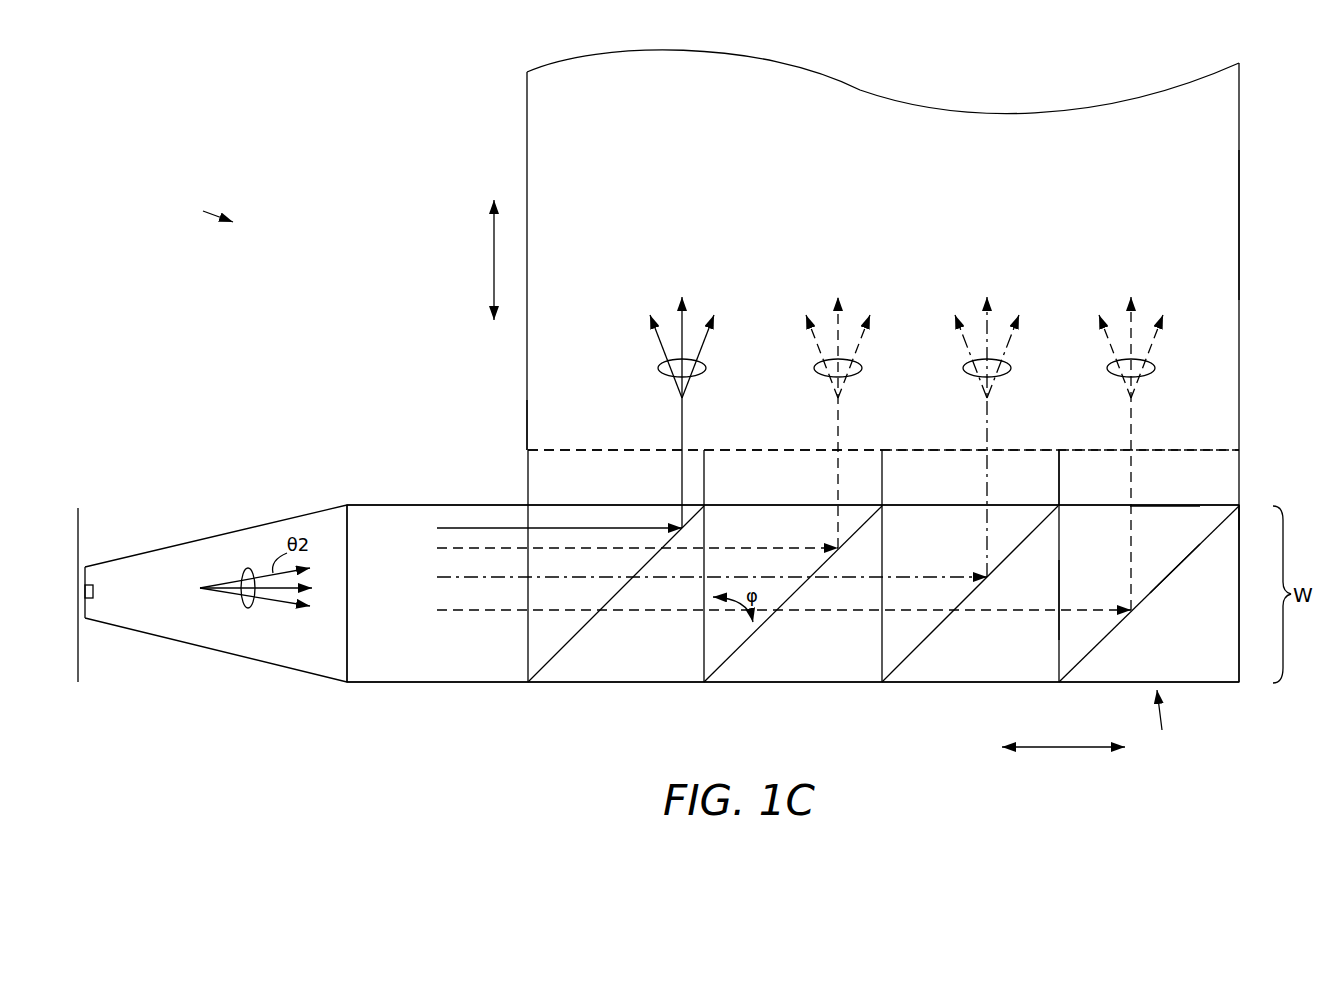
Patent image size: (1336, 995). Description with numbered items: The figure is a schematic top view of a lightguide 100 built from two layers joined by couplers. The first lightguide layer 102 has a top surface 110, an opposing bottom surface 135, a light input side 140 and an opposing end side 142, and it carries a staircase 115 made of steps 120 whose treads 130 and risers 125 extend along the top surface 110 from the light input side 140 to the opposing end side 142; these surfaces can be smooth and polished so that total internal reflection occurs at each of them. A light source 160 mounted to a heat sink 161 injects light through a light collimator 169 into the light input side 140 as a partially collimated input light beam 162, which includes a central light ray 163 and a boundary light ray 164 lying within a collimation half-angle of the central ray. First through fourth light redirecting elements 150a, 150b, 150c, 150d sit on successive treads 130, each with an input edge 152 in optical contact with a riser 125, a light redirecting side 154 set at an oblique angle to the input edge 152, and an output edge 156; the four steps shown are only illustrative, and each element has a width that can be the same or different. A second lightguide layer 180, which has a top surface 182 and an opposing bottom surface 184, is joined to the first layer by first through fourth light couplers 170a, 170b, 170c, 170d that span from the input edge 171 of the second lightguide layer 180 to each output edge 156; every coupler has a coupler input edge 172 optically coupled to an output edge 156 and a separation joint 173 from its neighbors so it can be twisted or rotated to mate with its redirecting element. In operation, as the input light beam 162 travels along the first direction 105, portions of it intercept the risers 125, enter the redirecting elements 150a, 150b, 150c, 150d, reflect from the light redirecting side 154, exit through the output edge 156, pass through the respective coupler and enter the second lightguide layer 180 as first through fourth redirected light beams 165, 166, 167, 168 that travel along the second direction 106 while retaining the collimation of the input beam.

The lightguide 100 is at (195, 211).
The first lightguide layer 102 is at (378, 505).
The first direction 105 is at (1058, 748).
The second direction 106 is at (494, 260).
The top surface 110 is at (446, 665).
The staircase 115 is at (823, 708).
The steps 120 is at (1163, 722).
The risers 125 is at (1055, 655).
The treads 130 is at (1207, 683).
The opposing bottom surface 135 is at (506, 683).
The light input side 140 is at (348, 667).
The opposing end side 142 is at (1239, 627).
The first light redirecting element 150a is at (547, 652).
The second light redirecting element 150b is at (722, 653).
The third light redirecting element 150c is at (898, 652).
The fourth light redirecting element 150d is at (1075, 653).
The input edge 152 is at (1059, 580).
The light redirecting side 154 is at (1170, 575).
The output edge 156 is at (1148, 508).
The light source 160 is at (93, 590).
The heat sink 161 is at (78, 518).
The partially collimated input light beam 162 is at (248, 567).
The central light ray 163 is at (300, 592).
The boundary light ray 164 is at (273, 600).
The first redirected light beam 165 is at (706, 368).
The second redirected light beam 166 is at (862, 368).
The third redirected light beam 167 is at (1011, 368).
The fourth redirected light beam 168 is at (1155, 368).
The light collimator 169 is at (195, 538).
The first light coupler 170a is at (542, 475).
The second light coupler 170b is at (765, 458).
The third light coupler 170c is at (930, 458).
The fourth light coupler 170d is at (1193, 460).
The input edge of second lightguide layer 171 is at (527, 445).
The coupler input edge 172 is at (1220, 505).
The separation joint 173 is at (1059, 472).
The second lightguide layer 180 is at (1252, 136).
The top surface of second lightguide layer 182 is at (1222, 198).
The opposing bottom surface of second lightguide layer 184 is at (1240, 262).